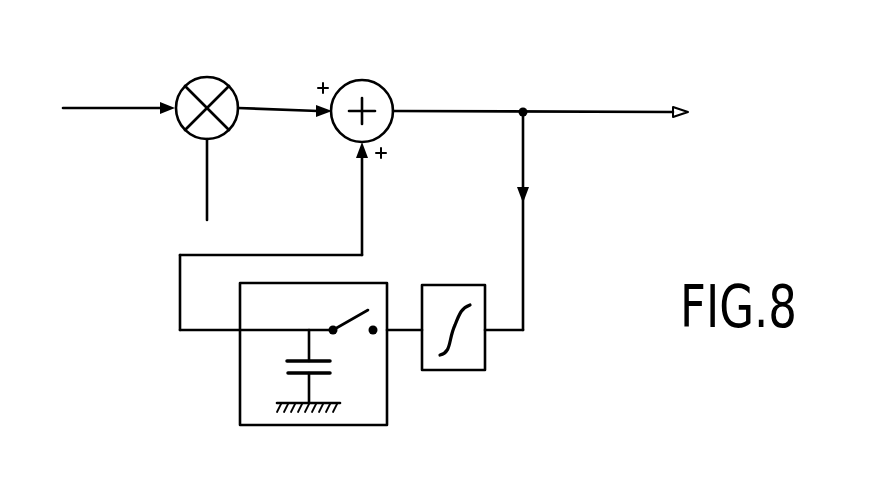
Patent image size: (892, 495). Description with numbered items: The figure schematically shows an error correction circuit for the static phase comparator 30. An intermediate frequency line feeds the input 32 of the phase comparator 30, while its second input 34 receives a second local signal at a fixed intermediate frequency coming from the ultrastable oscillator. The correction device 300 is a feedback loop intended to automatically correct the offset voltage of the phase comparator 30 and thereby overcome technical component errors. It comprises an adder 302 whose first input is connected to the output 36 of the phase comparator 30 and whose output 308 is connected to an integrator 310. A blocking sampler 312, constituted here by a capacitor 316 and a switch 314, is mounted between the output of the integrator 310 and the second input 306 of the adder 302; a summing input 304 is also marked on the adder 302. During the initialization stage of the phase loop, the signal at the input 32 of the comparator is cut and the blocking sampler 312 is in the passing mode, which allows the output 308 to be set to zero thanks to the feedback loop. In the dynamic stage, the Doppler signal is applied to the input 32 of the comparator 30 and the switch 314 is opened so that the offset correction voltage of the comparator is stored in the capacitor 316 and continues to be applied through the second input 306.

The phase comparator 30 is at (223, 81).
The input of the phase comparator 32 is at (119, 90).
The second input of the phase comparator 34 is at (183, 179).
The output of the phase comparator 36 is at (266, 117).
The correction device 300 is at (532, 263).
The adder 302 is at (370, 82).
The first summing input 304 is at (332, 120).
The second input of the adder 306 is at (362, 207).
The output of the adder 308 is at (400, 110).
The integrator 310 is at (473, 372).
The blocking sampler 312 is at (240, 407).
The switch 314 is at (378, 318).
The capacitor 316 is at (320, 373).